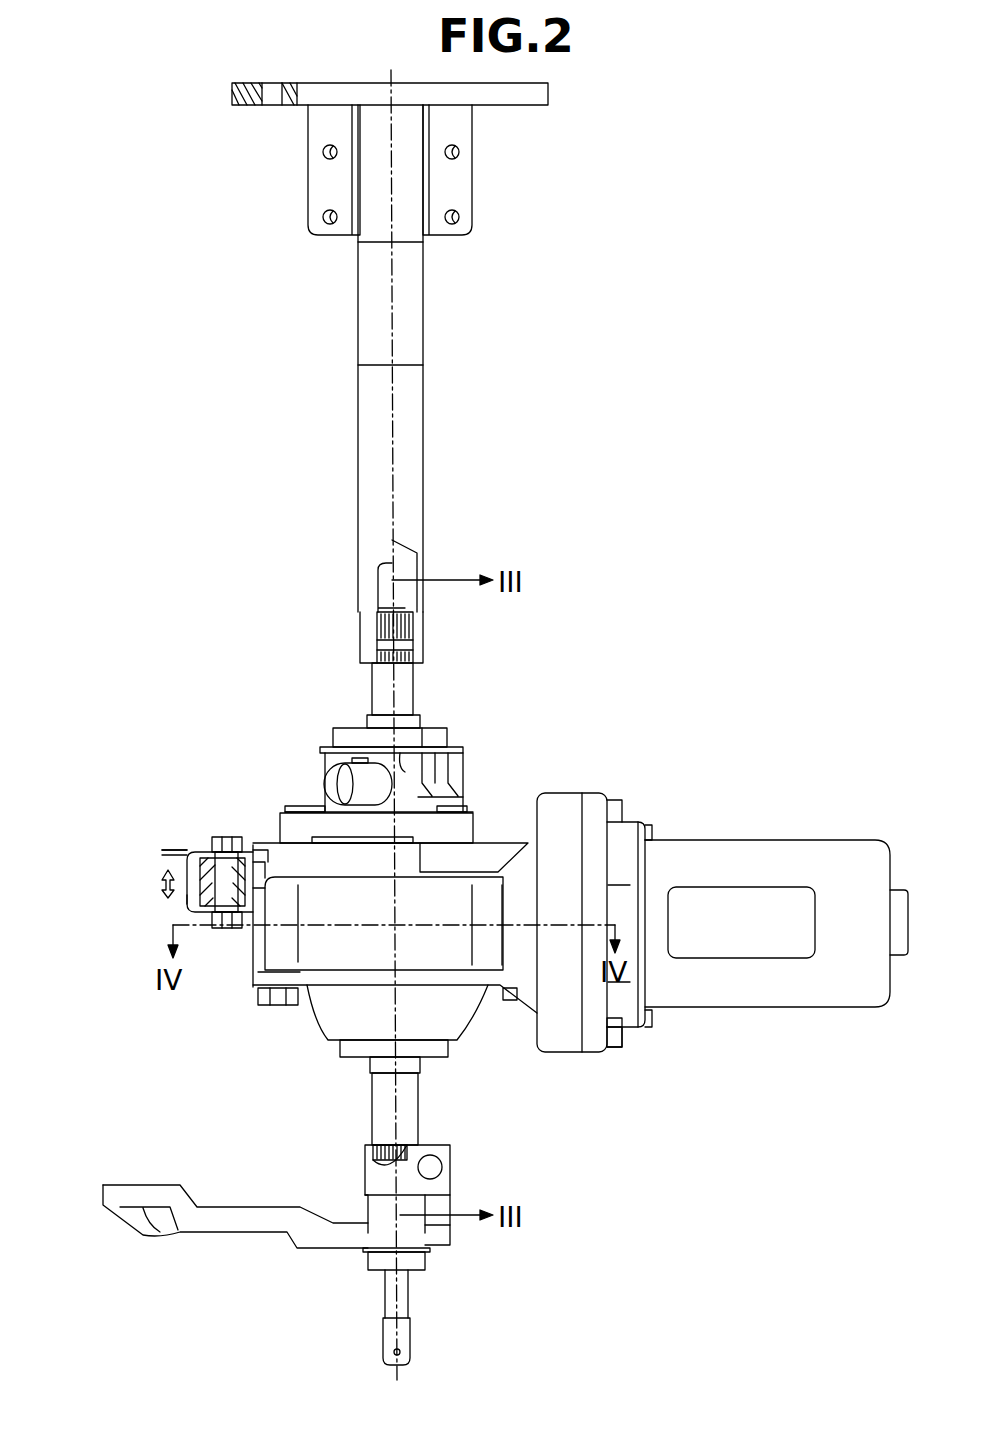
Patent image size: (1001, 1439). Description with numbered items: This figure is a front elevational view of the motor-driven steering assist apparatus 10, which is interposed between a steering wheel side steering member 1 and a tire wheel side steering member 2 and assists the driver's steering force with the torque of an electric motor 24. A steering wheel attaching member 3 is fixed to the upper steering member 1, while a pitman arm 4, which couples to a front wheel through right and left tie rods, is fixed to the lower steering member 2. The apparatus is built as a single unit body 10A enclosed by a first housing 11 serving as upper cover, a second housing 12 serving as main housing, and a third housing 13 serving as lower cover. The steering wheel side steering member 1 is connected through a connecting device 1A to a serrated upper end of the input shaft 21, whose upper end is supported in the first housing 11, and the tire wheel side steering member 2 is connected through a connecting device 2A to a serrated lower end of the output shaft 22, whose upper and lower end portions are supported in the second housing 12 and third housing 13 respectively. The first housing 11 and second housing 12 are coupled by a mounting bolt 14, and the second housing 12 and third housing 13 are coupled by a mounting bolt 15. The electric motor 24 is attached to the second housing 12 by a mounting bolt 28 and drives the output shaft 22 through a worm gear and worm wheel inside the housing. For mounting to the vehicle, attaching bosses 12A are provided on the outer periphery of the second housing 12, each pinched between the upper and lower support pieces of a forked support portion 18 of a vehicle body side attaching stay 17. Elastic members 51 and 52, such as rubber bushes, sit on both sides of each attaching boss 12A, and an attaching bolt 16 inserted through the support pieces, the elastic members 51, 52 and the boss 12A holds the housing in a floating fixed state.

The steering wheel side steering member 1 is at (365, 312).
The connecting device 1A is at (360, 630).
The tire wheel side steering member 2 is at (388, 1293).
The connecting device 2A is at (368, 1188).
The steering wheel attaching member 3 is at (232, 92).
The pitman arm 4 is at (220, 1228).
The motor-driven steering assist apparatus 10 is at (250, 700).
The unit body 10A is at (515, 778).
The first housing 11 is at (322, 783).
The second housing 12 is at (253, 955).
The attaching bosses 12A is at (205, 880).
The third housing 13 is at (330, 1025).
The mounting bolt 14 is at (290, 807).
The mounting bolt 15 is at (262, 995).
The attaching bolt 16 is at (225, 838).
The vehicle body side attaching stay 17 is at (175, 850).
The forked support portions 18 is at (192, 905).
The input shaft 21 is at (373, 690).
The output shaft 22 is at (372, 1118).
The electric motor 24 is at (835, 850).
The mounting bolt 28 is at (615, 1050).
The elastic member 51 is at (253, 857).
The elastic member 52 is at (250, 893).